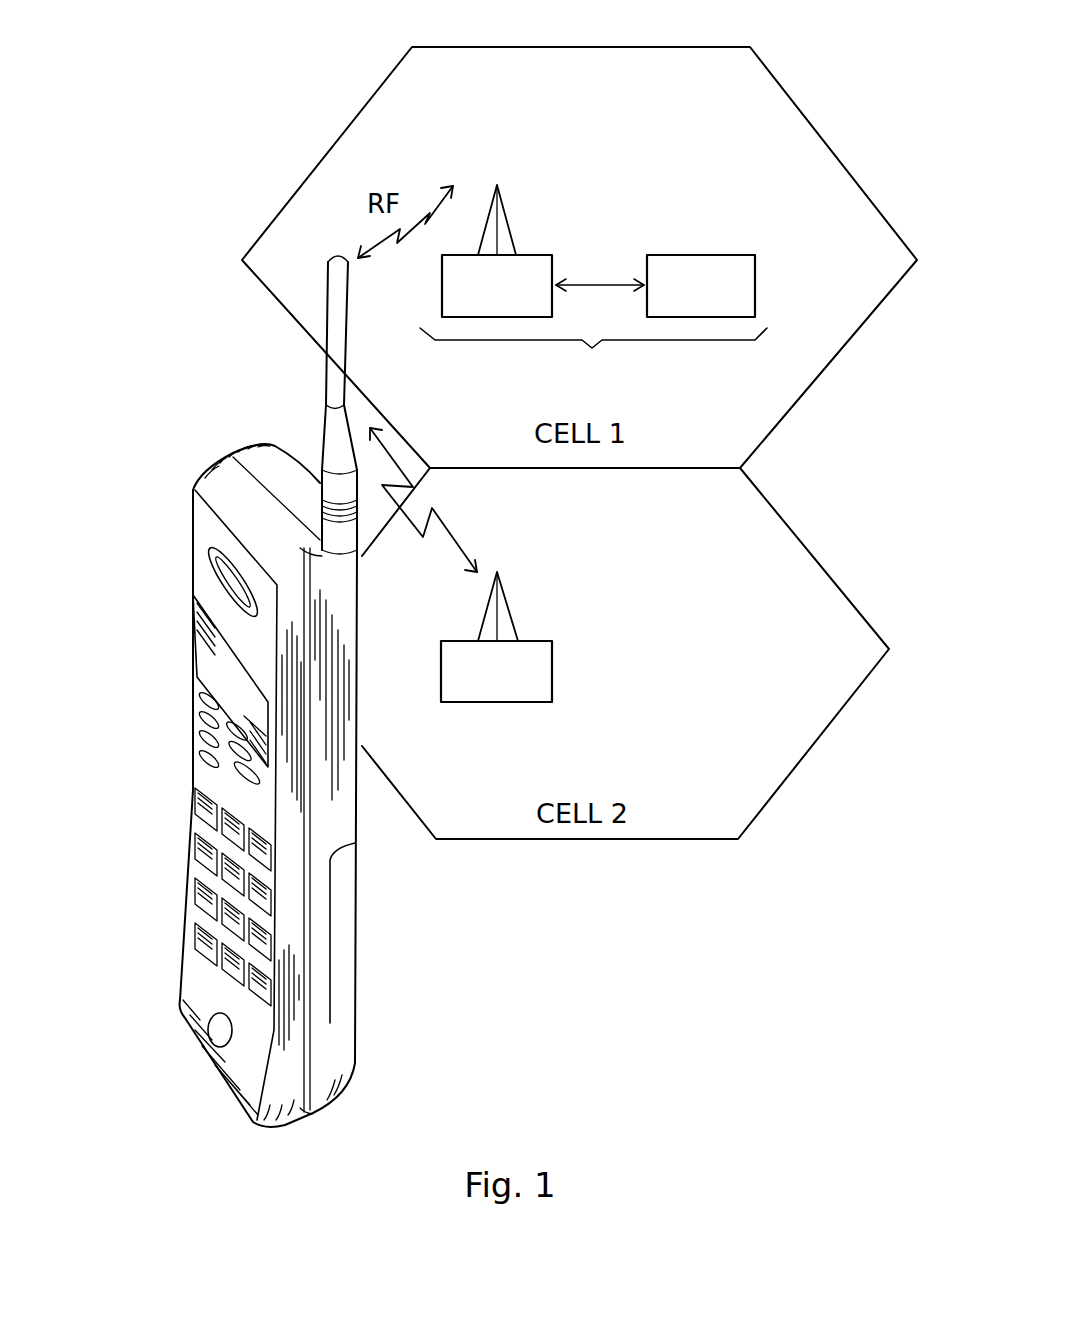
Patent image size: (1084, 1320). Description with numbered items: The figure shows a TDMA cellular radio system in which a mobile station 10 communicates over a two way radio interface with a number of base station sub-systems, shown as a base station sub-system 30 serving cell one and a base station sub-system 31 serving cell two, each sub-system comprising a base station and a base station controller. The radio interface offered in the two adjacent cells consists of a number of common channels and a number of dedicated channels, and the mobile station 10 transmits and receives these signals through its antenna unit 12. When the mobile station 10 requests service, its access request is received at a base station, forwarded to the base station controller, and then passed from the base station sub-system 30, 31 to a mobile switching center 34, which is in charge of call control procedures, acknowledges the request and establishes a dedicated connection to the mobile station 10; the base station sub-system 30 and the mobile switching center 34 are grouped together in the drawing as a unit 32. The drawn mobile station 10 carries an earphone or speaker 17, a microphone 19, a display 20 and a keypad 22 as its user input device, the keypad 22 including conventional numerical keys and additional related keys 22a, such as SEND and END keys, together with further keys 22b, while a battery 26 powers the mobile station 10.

The mobile station 10 is at (170, 488).
The antenna unit 12 is at (337, 385).
The earphone or speaker 17 is at (227, 563).
The microphone 19 is at (213, 1025).
The display 20 is at (227, 668).
The keypad 22 is at (250, 848).
The related keys 22a is at (193, 908).
The function keys 22b is at (198, 752).
The battery 26 is at (343, 982).
The base station sub-system 30 is at (537, 253).
The base station sub-system 31 is at (535, 641).
The base station/MSC interworking (BMI) 32 is at (593, 371).
The mobile switching center 34 is at (687, 253).